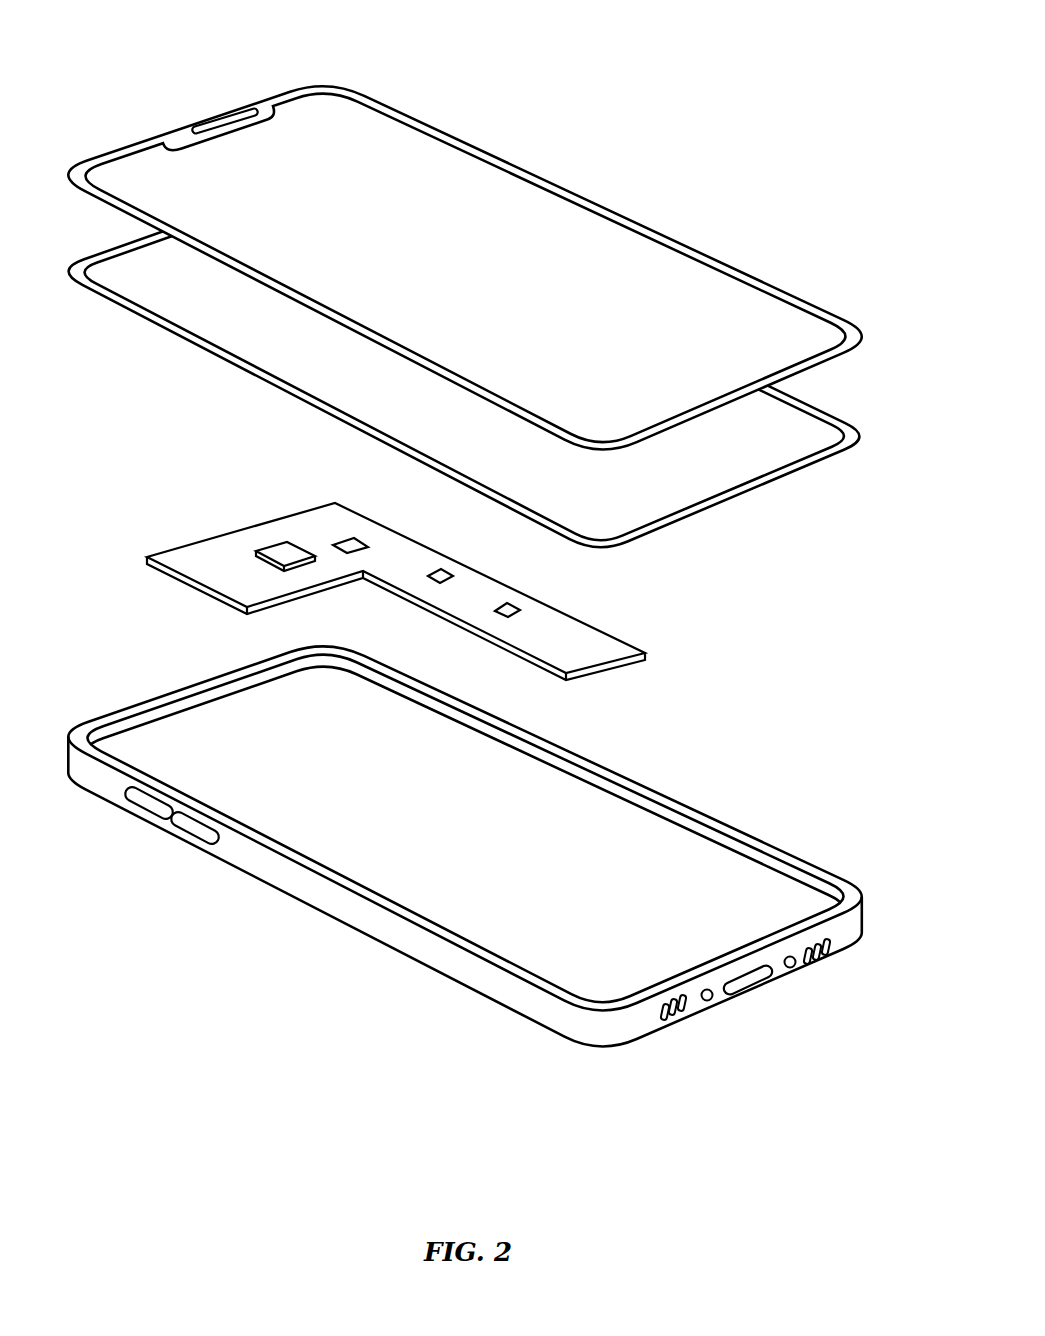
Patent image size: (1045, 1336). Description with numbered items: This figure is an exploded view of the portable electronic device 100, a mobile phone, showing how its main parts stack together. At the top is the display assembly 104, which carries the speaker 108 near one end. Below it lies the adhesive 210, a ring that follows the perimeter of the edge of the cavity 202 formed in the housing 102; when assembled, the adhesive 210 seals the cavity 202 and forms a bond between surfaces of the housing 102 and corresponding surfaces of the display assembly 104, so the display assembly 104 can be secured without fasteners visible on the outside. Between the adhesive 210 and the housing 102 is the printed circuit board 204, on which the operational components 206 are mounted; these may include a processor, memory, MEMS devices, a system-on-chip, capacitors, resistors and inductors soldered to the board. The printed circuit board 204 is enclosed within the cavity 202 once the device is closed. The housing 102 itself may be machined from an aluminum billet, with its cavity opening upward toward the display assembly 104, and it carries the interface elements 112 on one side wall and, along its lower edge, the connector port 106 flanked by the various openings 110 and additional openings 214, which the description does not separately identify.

The portable electronic device 100 is at (776, 78).
The housing 102 is at (467, 866).
The display assembly 104 is at (464, 251).
The connector port 106 is at (752, 987).
The speaker 108 is at (223, 121).
The openings 110 is at (685, 1008).
The interface elements 112 is at (150, 813).
The cavity 202 is at (715, 857).
The printed circuit board 204 is at (363, 578).
The operational components 206 is at (273, 545).
The adhesive 210 is at (832, 414).
The microphone openings 214 is at (793, 967).